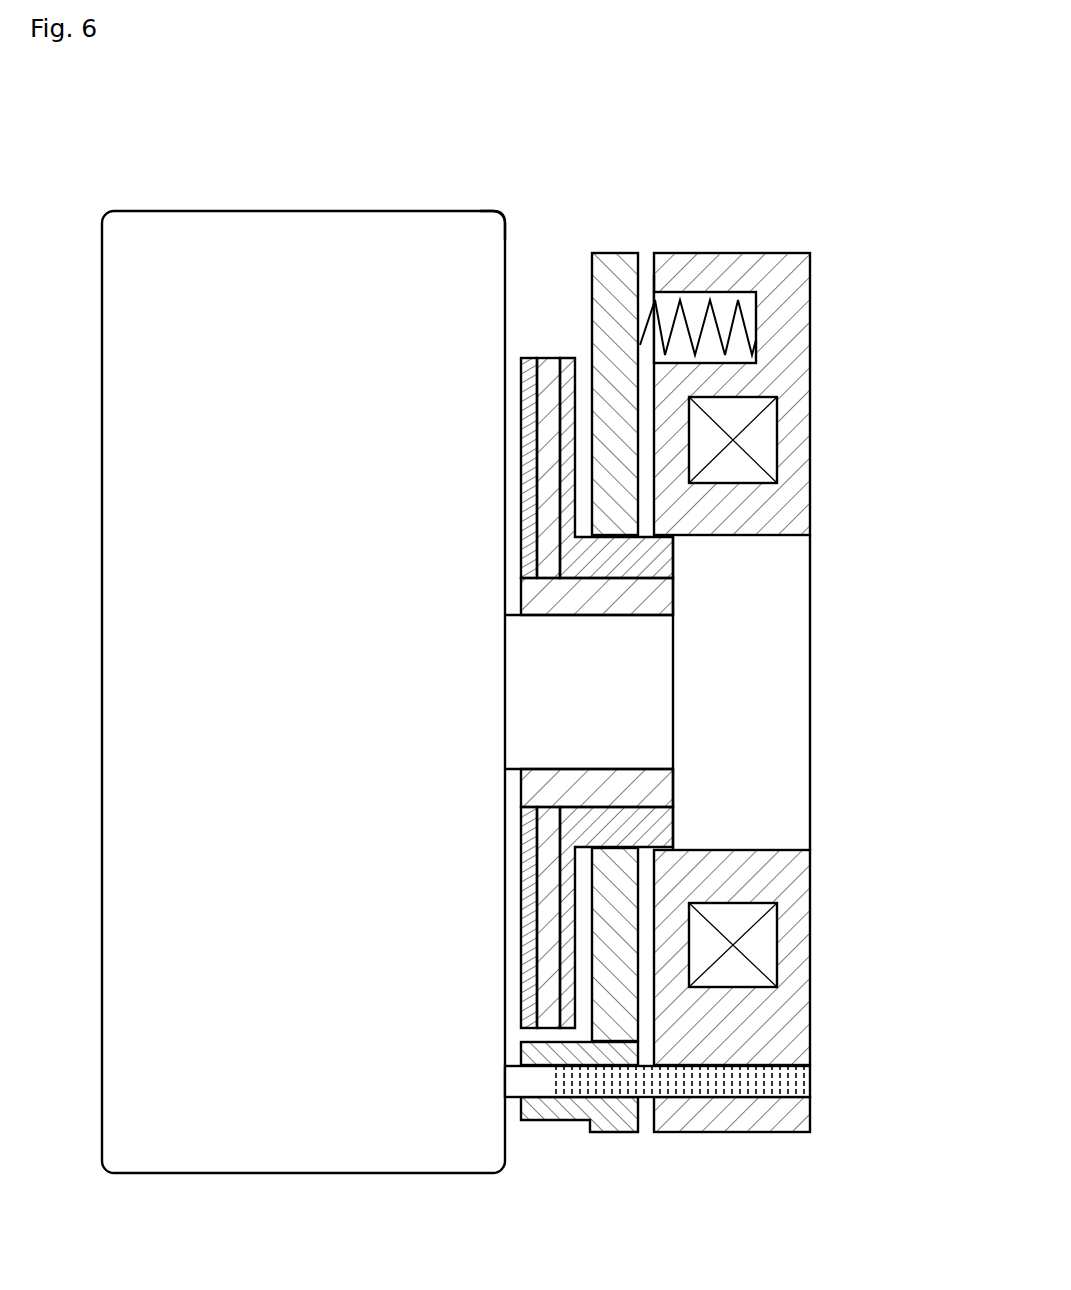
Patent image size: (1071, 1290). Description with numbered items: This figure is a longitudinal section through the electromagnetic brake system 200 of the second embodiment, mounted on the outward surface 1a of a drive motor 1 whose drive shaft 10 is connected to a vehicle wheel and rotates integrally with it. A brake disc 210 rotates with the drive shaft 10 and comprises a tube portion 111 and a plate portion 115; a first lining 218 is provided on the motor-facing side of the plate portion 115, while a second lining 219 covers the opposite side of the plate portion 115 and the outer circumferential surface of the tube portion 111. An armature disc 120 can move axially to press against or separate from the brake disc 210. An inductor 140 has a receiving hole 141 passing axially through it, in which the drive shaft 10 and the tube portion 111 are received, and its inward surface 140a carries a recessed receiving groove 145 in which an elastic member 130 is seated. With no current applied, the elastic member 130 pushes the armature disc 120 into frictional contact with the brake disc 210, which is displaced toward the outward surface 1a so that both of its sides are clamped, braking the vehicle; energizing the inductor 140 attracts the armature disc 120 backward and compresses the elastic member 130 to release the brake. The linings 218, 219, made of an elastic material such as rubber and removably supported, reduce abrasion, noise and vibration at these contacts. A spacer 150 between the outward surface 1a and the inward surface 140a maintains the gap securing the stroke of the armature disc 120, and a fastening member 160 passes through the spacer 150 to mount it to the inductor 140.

The drive motor 1 is at (113, 697).
The outward surface of the drive motor 1a is at (508, 242).
The electromagnetic brake system 200 is at (794, 166).
The drive shaft 10 is at (657, 722).
The armature disc 120 is at (606, 258).
The inductor 140 is at (805, 511).
The inward surface of the inductor 140a is at (656, 283).
The elastic member 130 is at (738, 322).
The receiving groove 145 is at (740, 358).
The receiving hole 141 is at (762, 768).
The first lining 218 is at (530, 358).
The second lining 219 is at (562, 358).
The tube portion 111 is at (668, 598).
The plate portion 115 is at (548, 548).
The brake disc 210 is at (888, 630).
The spacer 150 is at (630, 1117).
The fastening member 160 is at (542, 1083).